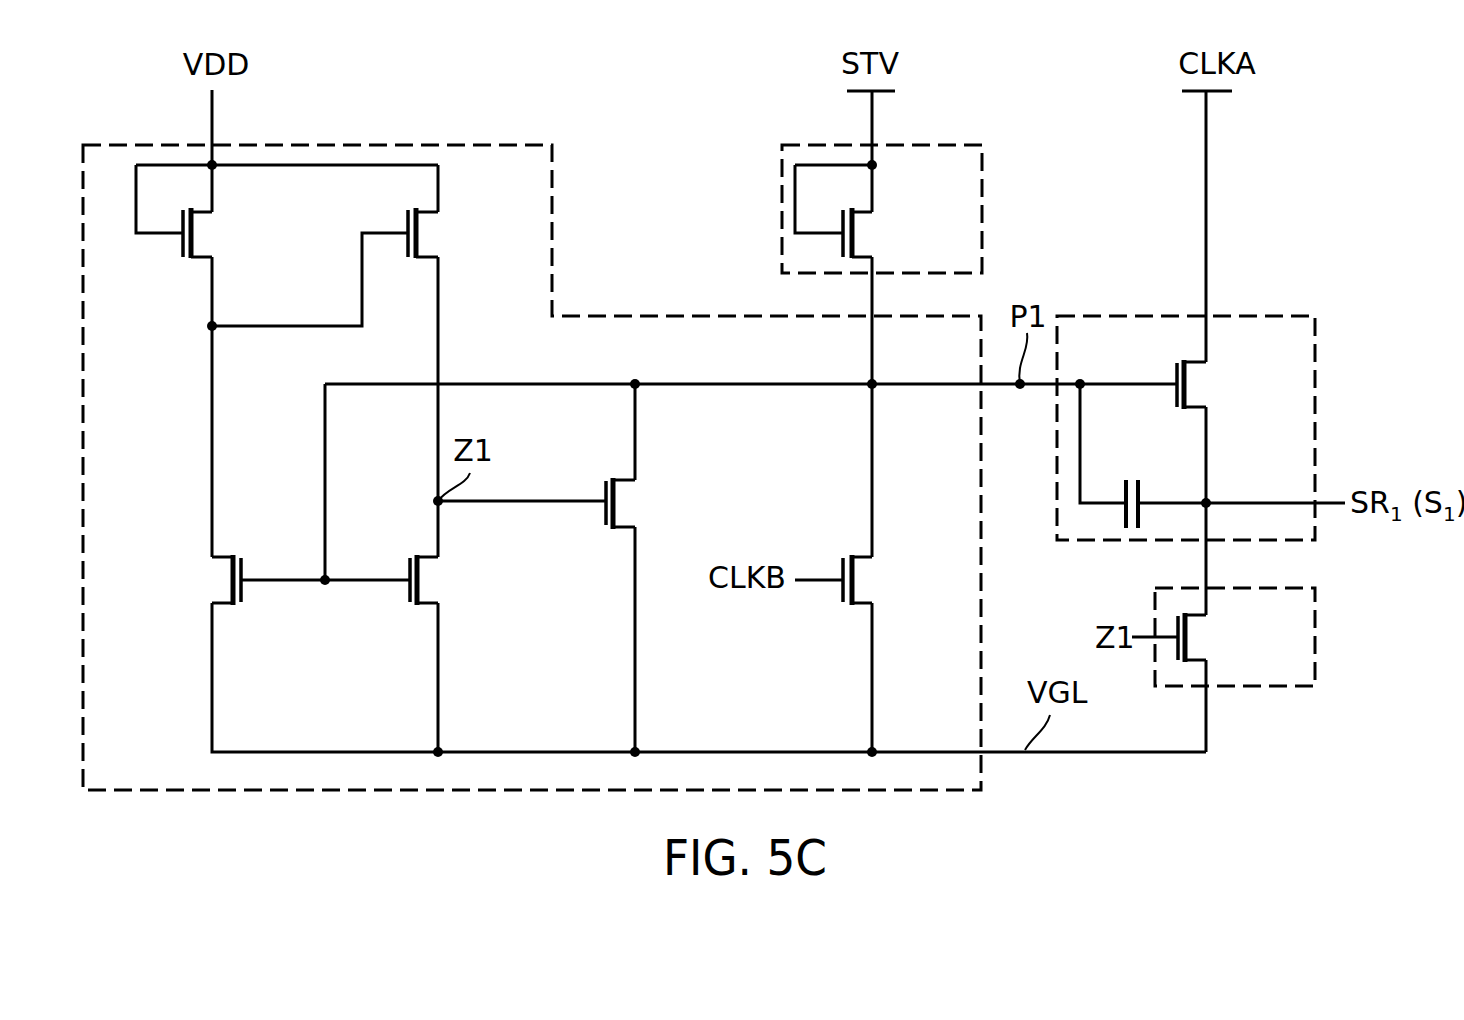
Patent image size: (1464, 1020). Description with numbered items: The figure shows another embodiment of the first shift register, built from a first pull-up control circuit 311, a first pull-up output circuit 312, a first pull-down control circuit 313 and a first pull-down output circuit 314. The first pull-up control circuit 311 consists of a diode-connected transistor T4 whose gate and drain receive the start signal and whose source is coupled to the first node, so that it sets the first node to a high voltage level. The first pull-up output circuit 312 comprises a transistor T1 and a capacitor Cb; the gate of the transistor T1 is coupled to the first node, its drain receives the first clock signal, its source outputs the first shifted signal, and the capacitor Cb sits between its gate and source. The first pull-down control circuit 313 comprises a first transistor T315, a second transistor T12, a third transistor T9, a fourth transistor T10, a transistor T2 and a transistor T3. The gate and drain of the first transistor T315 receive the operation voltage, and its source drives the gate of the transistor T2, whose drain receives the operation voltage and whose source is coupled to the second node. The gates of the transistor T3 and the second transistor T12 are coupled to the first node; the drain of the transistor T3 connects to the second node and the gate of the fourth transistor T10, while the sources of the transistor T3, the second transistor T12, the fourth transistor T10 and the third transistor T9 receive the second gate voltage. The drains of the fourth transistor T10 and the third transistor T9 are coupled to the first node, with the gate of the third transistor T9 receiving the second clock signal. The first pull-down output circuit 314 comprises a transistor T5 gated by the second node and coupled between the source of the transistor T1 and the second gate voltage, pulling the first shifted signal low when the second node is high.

The first pull-up control circuit 311 is at (957, 143).
The first pull-up output circuit 312 is at (1288, 315).
The first pull-down control circuit 313 is at (437, 143).
The first pull-down output circuit 314 is at (1290, 688).
The transistor T1 is at (1215, 383).
The transistor T2 is at (447, 235).
The transistor T3 is at (447, 578).
The transistor T4 is at (880, 235).
The transistor T5 is at (1215, 636).
The third transistor T9 is at (882, 578).
The fourth transistor T10 is at (645, 500).
The second transistor T12 is at (202, 578).
The first transistor T315 is at (222, 235).
The capacitor Cb is at (1135, 477).